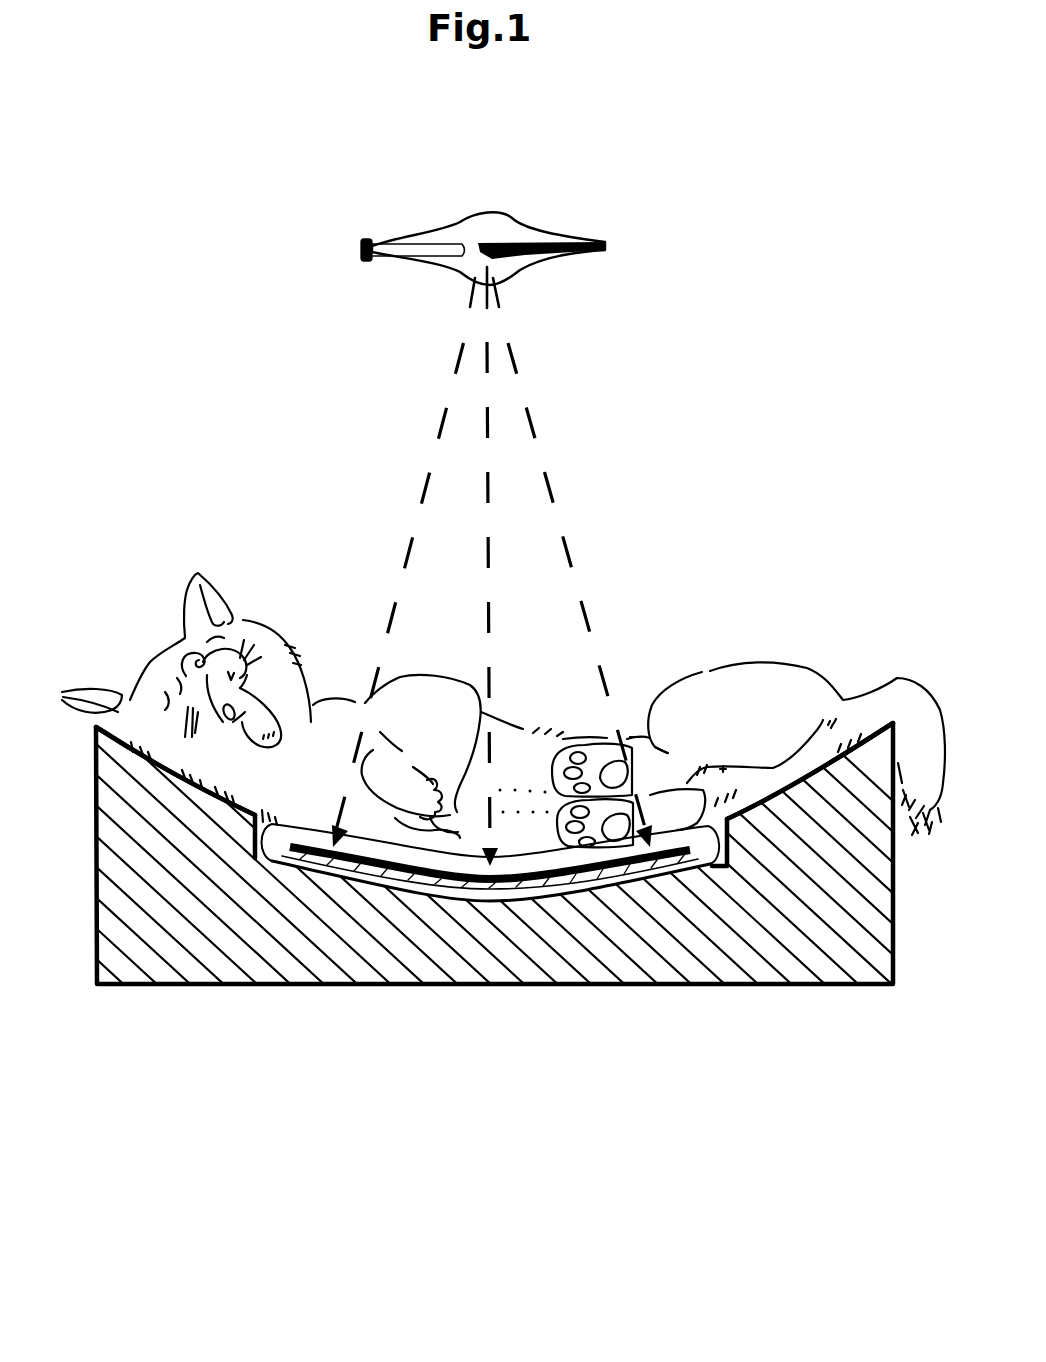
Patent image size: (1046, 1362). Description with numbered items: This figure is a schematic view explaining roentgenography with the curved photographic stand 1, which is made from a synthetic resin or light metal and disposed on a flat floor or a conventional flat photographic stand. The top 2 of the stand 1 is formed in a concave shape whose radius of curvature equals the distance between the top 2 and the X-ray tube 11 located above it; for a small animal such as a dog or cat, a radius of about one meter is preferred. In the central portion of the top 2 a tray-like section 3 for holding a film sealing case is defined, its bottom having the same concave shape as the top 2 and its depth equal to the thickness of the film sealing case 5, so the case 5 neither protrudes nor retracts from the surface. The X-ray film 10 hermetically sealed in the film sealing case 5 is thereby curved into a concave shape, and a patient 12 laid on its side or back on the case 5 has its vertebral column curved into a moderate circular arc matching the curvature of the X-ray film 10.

The curved photographic stand 1 is at (139, 990).
The top 2 is at (773, 793).
The tray-like section for holding a film sealing case 3 is at (362, 888).
The film sealing case 5 is at (450, 888).
The X-ray film 10 is at (519, 888).
The X-ray tube 11 is at (447, 210).
The patient 12 is at (327, 647).